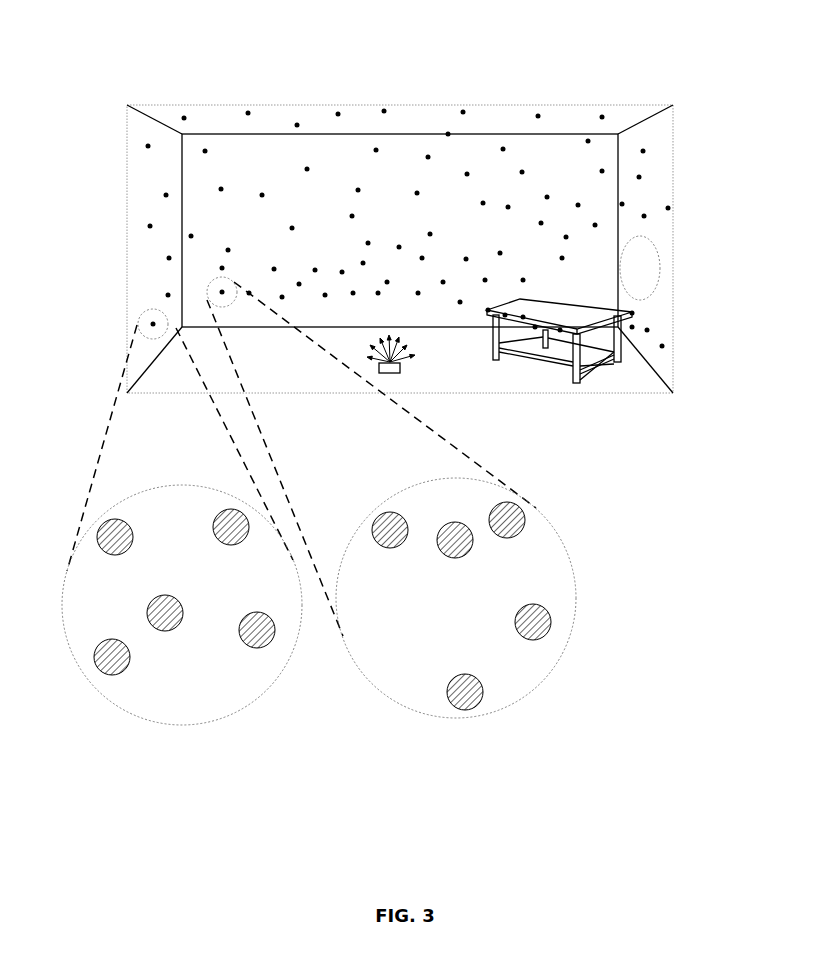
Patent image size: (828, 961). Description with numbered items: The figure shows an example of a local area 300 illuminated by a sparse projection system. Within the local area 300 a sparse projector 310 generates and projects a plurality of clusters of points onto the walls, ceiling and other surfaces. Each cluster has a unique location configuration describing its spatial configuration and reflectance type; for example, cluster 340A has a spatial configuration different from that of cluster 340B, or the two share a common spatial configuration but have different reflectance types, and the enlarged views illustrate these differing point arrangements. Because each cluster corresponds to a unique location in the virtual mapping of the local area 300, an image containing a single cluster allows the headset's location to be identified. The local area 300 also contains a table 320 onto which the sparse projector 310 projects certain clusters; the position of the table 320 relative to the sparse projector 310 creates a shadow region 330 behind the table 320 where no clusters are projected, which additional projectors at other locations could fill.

The local area 300 is at (122, 30).
The sparse projector 310 is at (404, 375).
The table 320 is at (622, 374).
The shadow region 330 is at (657, 270).
The cluster 340A is at (205, 292).
The cluster 340B is at (134, 329).